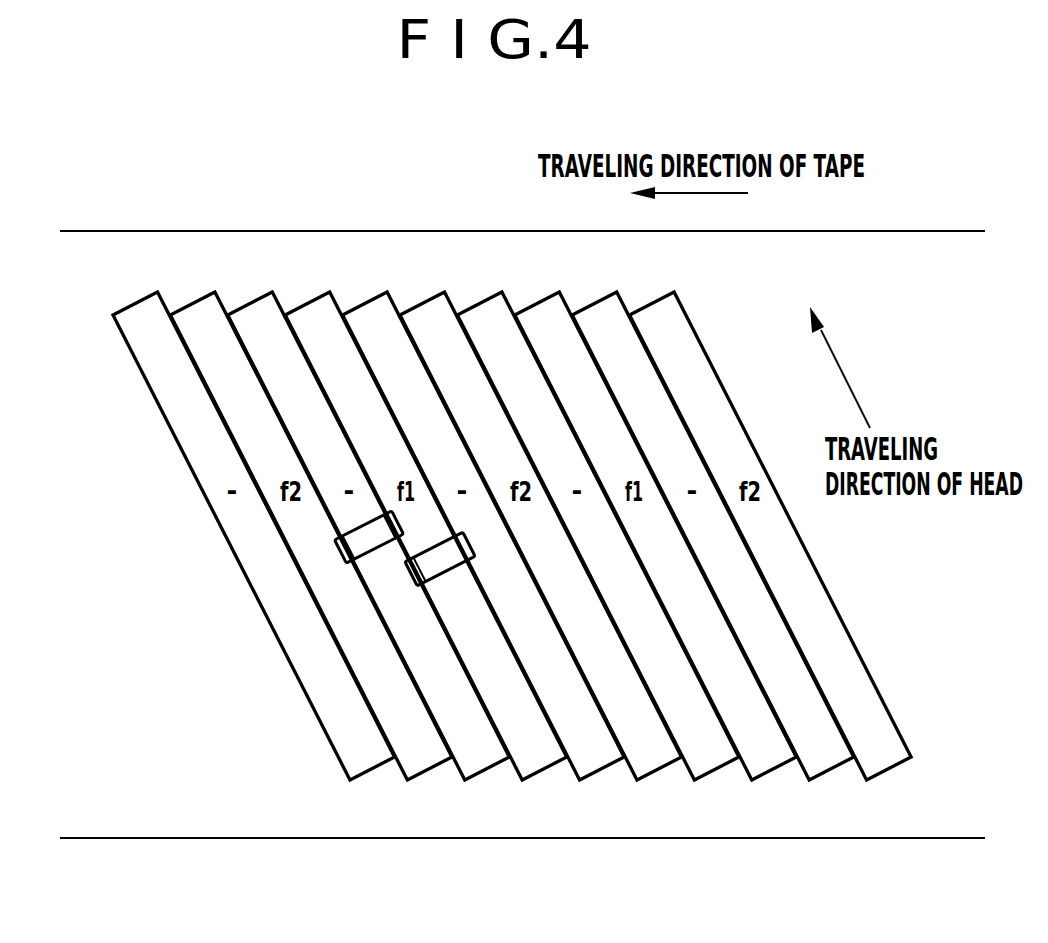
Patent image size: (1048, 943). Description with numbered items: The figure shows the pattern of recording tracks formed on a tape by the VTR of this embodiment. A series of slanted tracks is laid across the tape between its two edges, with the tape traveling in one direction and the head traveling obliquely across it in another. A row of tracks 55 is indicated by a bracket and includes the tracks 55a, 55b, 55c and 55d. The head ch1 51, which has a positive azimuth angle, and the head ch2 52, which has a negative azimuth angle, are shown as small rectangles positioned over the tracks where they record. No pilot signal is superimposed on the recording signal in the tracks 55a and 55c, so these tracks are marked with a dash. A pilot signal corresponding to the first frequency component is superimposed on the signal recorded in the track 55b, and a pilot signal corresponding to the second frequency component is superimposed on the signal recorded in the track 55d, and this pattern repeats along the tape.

The row of tracks 55 is at (402, 180).
The track 55a is at (262, 320).
The track 55b is at (312, 318).
The track 55c is at (372, 317).
The track 55d is at (203, 322).
The head ch1 51 is at (380, 551).
The head ch2 52 is at (455, 567).